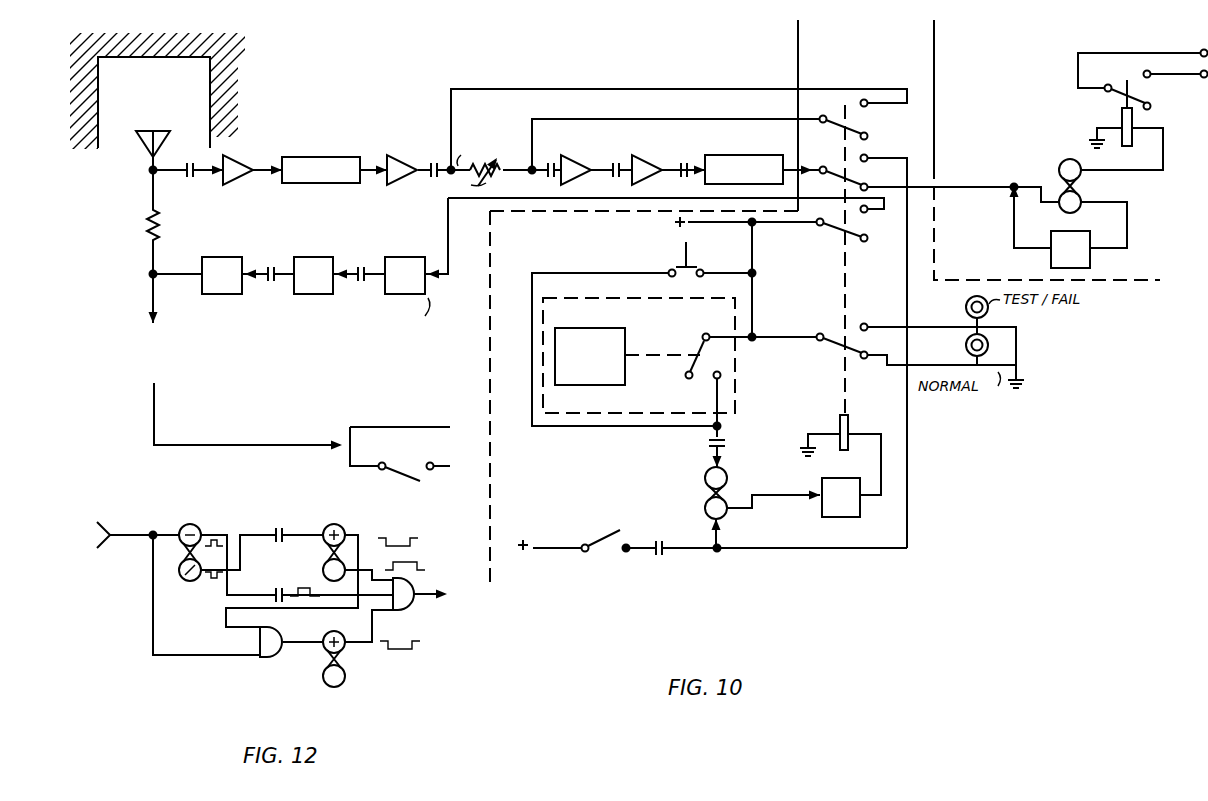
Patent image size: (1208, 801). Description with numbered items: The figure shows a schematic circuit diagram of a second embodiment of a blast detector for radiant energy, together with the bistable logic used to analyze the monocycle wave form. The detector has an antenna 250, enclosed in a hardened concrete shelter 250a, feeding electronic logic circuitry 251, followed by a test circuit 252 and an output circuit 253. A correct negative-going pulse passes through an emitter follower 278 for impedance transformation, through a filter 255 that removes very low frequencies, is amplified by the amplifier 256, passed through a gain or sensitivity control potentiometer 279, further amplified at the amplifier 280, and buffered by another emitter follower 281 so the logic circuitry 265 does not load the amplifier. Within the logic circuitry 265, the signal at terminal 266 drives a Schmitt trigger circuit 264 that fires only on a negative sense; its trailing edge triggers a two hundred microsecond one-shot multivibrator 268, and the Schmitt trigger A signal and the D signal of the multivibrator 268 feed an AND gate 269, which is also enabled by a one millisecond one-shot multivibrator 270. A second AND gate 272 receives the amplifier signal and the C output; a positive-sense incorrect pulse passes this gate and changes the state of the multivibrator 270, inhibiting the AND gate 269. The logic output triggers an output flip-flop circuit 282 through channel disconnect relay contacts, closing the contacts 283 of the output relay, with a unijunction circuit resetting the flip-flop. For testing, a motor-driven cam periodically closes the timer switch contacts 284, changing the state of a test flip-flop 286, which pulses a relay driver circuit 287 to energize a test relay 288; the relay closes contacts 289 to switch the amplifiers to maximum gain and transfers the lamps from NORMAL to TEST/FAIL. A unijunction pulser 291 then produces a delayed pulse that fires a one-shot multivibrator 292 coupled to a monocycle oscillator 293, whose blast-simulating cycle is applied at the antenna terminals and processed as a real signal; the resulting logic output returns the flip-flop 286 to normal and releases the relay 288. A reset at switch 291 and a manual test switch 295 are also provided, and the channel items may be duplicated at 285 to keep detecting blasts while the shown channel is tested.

In FIG. 10, the shelter 250a is at (231, 59).
In FIG. 10, the antenna 250 is at (177, 109).
In FIG. 10, the emitter follower 278 is at (233, 140).
In FIG. 10, the filter 255 is at (293, 140).
In FIG. 10, the amplifier 256 is at (396, 140).
In FIG. 10, the gain or sensitivity control potentiometer 279 is at (500, 165).
In FIG. 10, the amplifier 280 is at (587, 164).
In FIG. 10, the emitter follower 281 is at (652, 164).
In FIG. 10, the terminal 266 is at (691, 165).
In FIG. 12, the terminal 266 is at (108, 536).
In FIG. 10, the logic circuitry 265 is at (730, 161).
In FIG. 10, the electronic logic circuitry 251 is at (633, 72).
In FIG. 10, the test circuit 252 is at (889, 72).
In FIG. 10, the output circuit 253 is at (1028, 72).
In FIG. 10, the contacts 289 is at (862, 117).
In FIG. 10, the output flip-flop circuit 282 is at (1083, 180).
In FIG. 10, the contacts of the output relay 283 is at (1148, 94).
In FIG. 10, the manual test switch 295 is at (703, 278).
In FIG. 10, the timer switch contacts 284 is at (725, 364).
In FIG. 10, the test flip-flop 286 is at (747, 486).
In FIG. 10, the relay driver circuit 287 is at (847, 521).
In FIG. 10, the test relay 288 is at (852, 421).
In FIG. 10, the unijunction pulser 291 is at (628, 538).
In FIG. 10, the one-shot multivibrator 292 is at (300, 256).
In FIG. 10, the monocycle oscillator 293 is at (210, 256).
In FIG. 10, the duplicate channel 285 is at (98, 412).
In FIG. 12, the Schmitt trigger circuit 264 is at (182, 526).
In FIG. 12, the 200 μs. one-shot multivibrator 268 is at (320, 548).
In FIG. 12, the AND gate 269 is at (432, 590).
In FIG. 12, the 1 ms. one-shot multivibrator 270 is at (346, 686).
In FIG. 12, the AND gate 272 is at (275, 655).